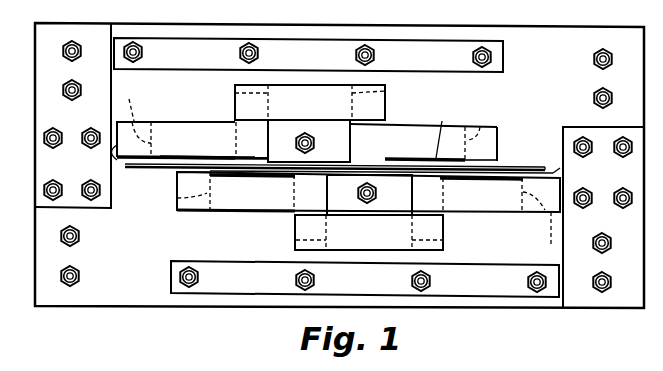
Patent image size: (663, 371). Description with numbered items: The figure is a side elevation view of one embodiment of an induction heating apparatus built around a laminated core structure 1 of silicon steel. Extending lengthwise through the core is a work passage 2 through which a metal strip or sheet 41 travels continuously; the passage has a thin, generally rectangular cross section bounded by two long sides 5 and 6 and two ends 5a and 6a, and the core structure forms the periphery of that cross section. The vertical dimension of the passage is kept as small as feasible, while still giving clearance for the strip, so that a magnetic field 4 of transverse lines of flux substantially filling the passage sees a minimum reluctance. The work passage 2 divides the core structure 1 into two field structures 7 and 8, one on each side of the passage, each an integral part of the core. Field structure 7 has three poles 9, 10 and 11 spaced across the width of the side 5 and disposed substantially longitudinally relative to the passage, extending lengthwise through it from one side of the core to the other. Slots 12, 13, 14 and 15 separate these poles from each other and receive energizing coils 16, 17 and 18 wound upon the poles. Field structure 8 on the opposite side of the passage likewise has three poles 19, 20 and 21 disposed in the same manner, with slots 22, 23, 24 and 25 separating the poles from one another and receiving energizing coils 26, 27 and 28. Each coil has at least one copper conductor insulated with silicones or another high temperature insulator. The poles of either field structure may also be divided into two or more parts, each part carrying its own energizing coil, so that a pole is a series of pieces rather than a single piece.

The laminated core structure 1 is at (548, 38).
The work passage 2 is at (556, 173).
The magnetic field 4 is at (492, 165).
The metal strip or sheet 41 is at (140, 170).
The long side of passage 5 is at (245, 159).
The end of passage 5a is at (110, 155).
The long side of passage 6 is at (184, 177).
The end of passage 6a is at (557, 160).
The field structure 7 is at (415, 123).
The field structure 8 is at (456, 228).
The pole 9 is at (189, 155).
The pole 10 is at (275, 119).
The pole 11 is at (434, 131).
The slot 12 is at (134, 101).
The slot 13 is at (232, 92).
The slot 14 is at (387, 91).
The slot 15 is at (480, 126).
The energizing coil 16 is at (492, 138).
The energizing coil 17 is at (386, 105).
The energizing coil 18 is at (143, 133).
The pole 19 is at (247, 174).
The pole 20 is at (359, 179).
The pole 21 is at (492, 181).
The slot 22 is at (176, 197).
The slot 23 is at (295, 245).
The slot 24 is at (443, 249).
The slot 25 is at (550, 238).
The energizing coil 26 is at (197, 212).
The energizing coil 27 is at (297, 227).
The energizing coil 28 is at (535, 206).